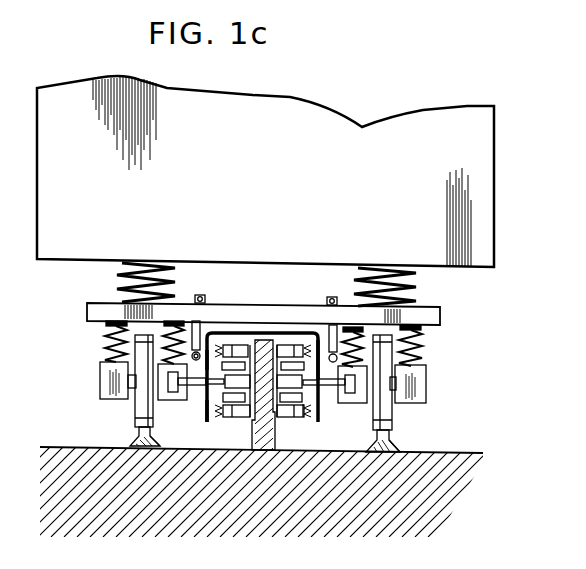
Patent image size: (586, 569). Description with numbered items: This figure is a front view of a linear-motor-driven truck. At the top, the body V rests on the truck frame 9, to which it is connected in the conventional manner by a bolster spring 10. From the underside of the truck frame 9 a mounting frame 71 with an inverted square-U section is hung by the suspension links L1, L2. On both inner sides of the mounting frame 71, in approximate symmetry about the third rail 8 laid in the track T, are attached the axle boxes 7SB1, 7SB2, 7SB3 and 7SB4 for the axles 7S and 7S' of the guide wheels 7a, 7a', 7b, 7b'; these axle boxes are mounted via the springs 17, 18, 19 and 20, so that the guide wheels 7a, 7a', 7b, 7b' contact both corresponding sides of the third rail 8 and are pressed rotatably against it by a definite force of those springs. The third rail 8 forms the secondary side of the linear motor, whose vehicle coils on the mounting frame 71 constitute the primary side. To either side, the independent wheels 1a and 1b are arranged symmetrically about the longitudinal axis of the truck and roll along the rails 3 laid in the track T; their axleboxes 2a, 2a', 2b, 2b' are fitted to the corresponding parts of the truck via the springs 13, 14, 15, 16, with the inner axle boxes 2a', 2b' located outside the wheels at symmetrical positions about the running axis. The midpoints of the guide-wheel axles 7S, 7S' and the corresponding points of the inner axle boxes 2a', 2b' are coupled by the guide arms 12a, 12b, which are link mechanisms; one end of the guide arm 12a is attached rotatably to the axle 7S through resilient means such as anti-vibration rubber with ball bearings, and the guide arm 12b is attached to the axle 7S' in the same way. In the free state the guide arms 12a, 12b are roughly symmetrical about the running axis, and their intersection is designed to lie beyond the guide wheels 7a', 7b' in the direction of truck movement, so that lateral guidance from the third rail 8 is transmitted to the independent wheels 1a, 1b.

The body V is at (483, 252).
The bolster spring 10 is at (120, 275).
The truck frame 9 is at (432, 318).
The spring 15 is at (178, 300).
The spring 19 is at (198, 295).
The spring 17 is at (330, 345).
The spring 16 is at (112, 337).
The spring 13 is at (420, 338).
The axlebox 2b is at (97, 376).
The axlebox 2a is at (431, 384).
The independent wheel 1b is at (140, 416).
The independent wheel 1a is at (380, 410).
The rail 3 is at (142, 447).
The inner axle box 2b' is at (146, 474).
The inner axle box 2a' is at (424, 435).
The guide arm 12b is at (200, 399).
The guide arm 12a is at (352, 404).
The mounting frame 71 is at (268, 331).
The spring 20 is at (207, 425).
The spring 14 is at (320, 330).
The suspension link L1 is at (190, 300).
The suspension link L2 is at (336, 300).
The switch contact 7SB3 is at (228, 345).
The axle 7S' is at (235, 304).
The guide wheel 7b is at (247, 307).
The guide wheel 7b' is at (245, 442).
The axle box 7SB4 is at (226, 417).
The axle box 7SB1 is at (302, 345).
The axle 7S is at (292, 304).
The guide wheel 7a is at (291, 307).
The guide wheel 7a' is at (302, 442).
The axle box 7SB2 is at (302, 414).
The spring 18 is at (292, 417).
The third rail 8 is at (266, 455).
The track T is at (470, 462).